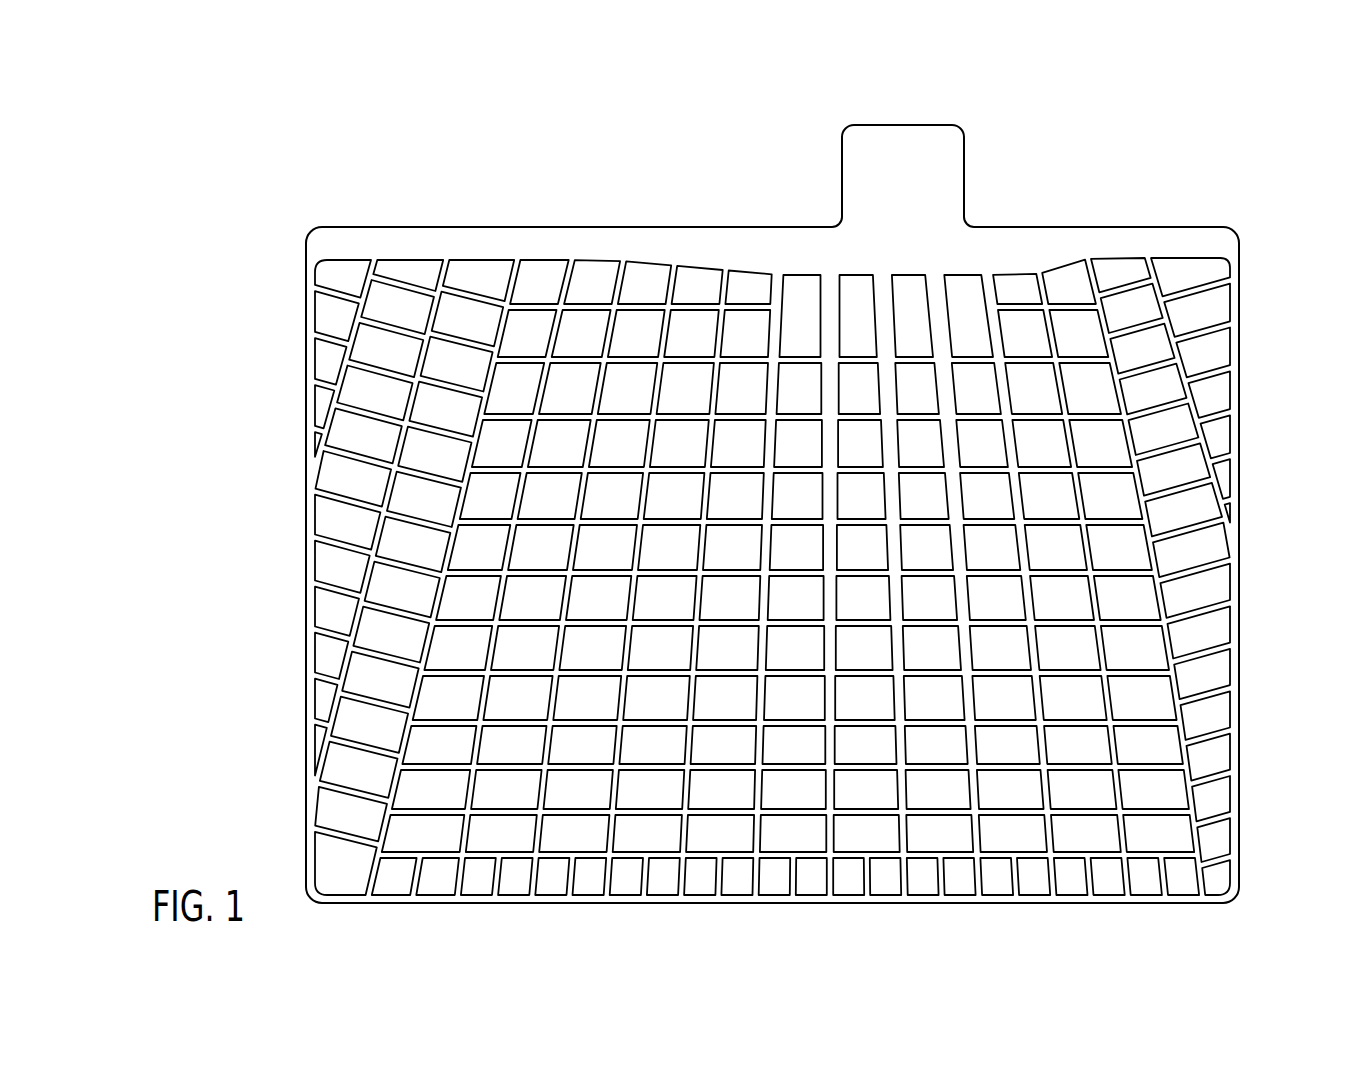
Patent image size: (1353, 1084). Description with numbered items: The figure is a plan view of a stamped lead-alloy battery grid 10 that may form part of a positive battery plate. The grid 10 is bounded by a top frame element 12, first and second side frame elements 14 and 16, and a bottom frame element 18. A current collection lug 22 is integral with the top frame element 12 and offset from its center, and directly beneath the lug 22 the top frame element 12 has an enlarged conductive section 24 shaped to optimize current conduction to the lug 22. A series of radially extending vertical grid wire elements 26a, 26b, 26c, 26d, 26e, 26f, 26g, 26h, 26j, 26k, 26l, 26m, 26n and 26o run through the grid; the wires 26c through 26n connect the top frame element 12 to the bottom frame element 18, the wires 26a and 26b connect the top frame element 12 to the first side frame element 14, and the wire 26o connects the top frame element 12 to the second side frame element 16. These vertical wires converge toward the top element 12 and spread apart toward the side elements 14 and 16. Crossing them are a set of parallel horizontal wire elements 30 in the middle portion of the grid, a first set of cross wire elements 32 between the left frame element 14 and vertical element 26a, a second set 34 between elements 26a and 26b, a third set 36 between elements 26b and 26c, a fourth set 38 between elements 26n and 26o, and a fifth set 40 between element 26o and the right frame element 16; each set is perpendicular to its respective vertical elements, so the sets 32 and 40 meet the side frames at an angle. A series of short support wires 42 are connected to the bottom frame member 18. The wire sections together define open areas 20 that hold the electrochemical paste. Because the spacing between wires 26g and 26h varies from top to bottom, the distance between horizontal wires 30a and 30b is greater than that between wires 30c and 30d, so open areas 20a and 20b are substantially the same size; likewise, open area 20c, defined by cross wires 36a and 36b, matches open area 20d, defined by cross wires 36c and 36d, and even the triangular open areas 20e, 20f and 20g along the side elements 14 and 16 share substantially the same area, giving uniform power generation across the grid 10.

The battery grid 10 is at (174, 412).
The top frame element 12 is at (560, 240).
The first side frame element 14 is at (306, 568).
The second side frame element 16 is at (1240, 567).
The bottom frame element 18 is at (772, 903).
The open areas 20 is at (335, 815).
The open area 20a is at (745, 383).
The open area 20b is at (748, 792).
The open area 20c is at (435, 458).
The open area 20d is at (370, 748).
The triangular open area 20e is at (322, 418).
The triangular open area 20f is at (320, 688).
The triangular open area 20g is at (1225, 482).
The current collection lug 22 is at (905, 133).
The enlarged conductive section 24 is at (920, 224).
The vertical grid wire element 26a is at (345, 390).
The vertical grid wire element 26b is at (352, 672).
The vertical grid wire element 26c is at (355, 880).
The vertical grid wire element 26d is at (447, 840).
The vertical grid wire element 26e is at (518, 832).
The vertical grid wire element 26f is at (594, 832).
The vertical grid wire element 26g is at (672, 832).
The vertical grid wire element 26h is at (762, 278).
The vertical grid wire element 26j is at (922, 805).
The vertical grid wire element 26k is at (997, 805).
The vertical grid wire element 26l is at (1068, 805).
The vertical grid wire element 26m is at (1155, 805).
The vertical grid wire element 26n is at (1200, 755).
The vertical grid wire element 26o is at (1228, 396).
The horizontal wire elements 30 is at (643, 355).
The horizontal wire element 30a is at (700, 360).
The horizontal wire element 30b is at (758, 410).
The horizontal wire element 30c is at (722, 770).
The horizontal wire element 30d is at (740, 805).
The first set of cross wire elements 32 is at (337, 285).
The second set of cross wire elements 34 is at (405, 290).
The third set of cross wire elements 36 is at (478, 293).
The cross wire element 36a is at (410, 425).
The cross wire element 36b is at (430, 478).
The cross wire element 36c is at (367, 712).
The cross wire element 36d is at (375, 770).
The fourth set of cross wire elements 38 is at (1115, 280).
The fifth set of cross wire elements 40 is at (1195, 280).
The short support wires 42 is at (1108, 860).